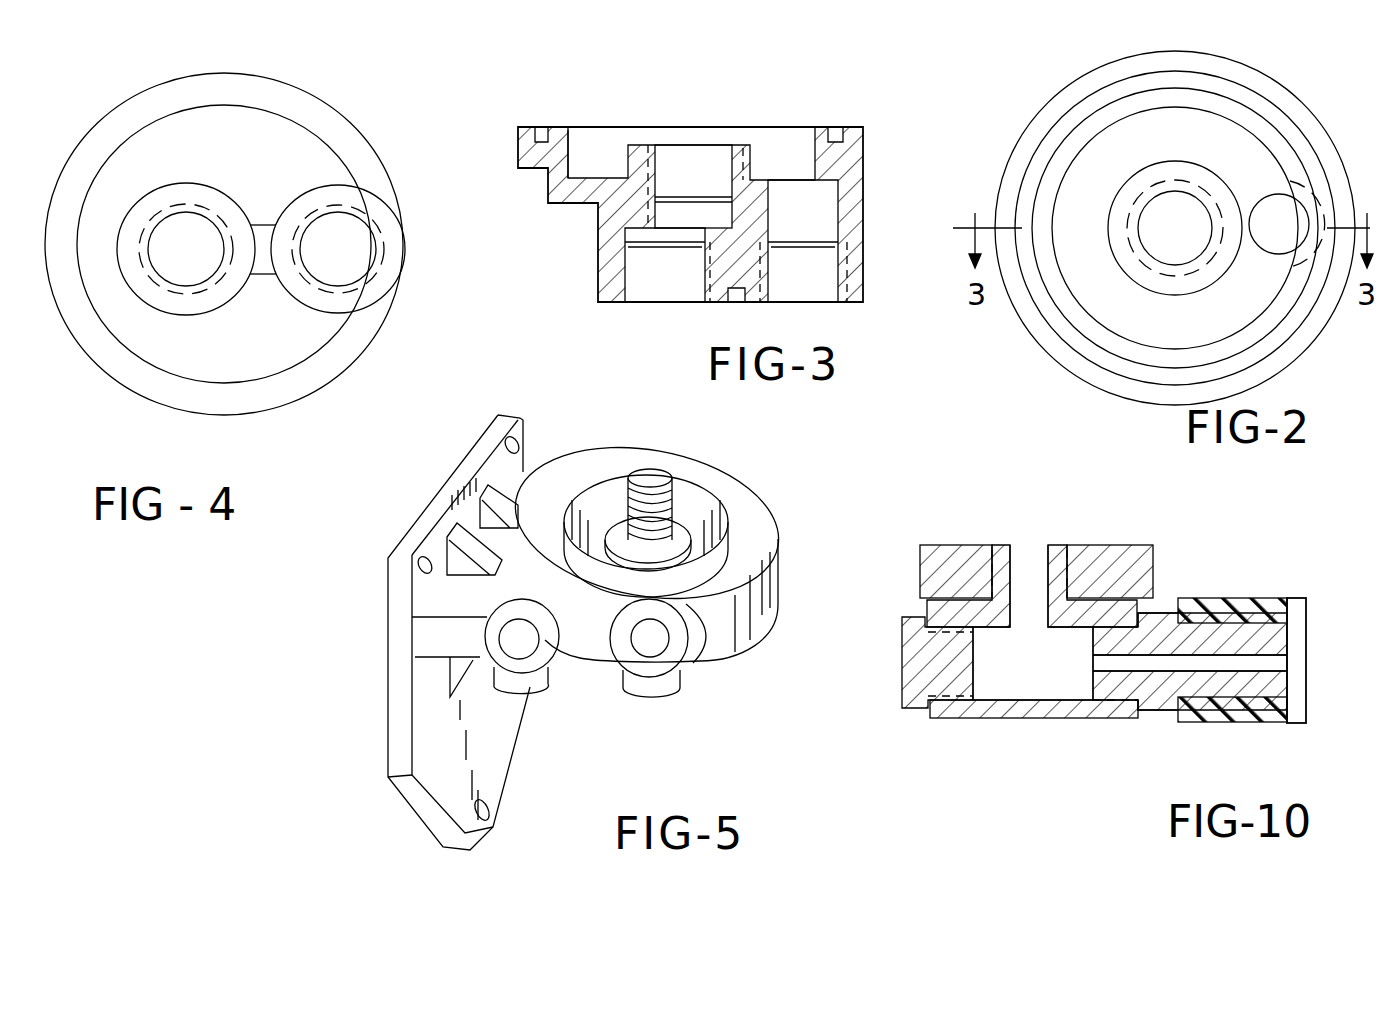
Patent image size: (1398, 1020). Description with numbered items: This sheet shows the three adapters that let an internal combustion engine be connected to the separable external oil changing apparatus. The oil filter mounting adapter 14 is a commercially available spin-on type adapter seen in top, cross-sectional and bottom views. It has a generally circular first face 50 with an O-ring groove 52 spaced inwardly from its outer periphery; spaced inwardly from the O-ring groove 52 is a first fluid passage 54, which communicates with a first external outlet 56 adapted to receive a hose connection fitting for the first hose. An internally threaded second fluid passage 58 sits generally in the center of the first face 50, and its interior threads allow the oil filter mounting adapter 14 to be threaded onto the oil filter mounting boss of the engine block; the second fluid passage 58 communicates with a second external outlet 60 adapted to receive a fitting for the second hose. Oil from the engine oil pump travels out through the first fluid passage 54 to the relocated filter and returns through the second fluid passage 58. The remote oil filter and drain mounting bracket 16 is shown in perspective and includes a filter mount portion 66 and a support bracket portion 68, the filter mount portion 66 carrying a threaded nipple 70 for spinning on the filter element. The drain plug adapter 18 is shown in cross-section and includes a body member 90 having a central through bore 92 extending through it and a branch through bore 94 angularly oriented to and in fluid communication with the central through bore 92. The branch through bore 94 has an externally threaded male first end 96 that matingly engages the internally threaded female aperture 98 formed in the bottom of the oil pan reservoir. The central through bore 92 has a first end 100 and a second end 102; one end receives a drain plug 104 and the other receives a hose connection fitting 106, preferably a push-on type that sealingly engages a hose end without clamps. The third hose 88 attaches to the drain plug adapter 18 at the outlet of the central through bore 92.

In FIG. 4, the oil filter mounting adapter 14 is at (338, 62).
In FIG. 3, the oil filter mounting adapter 14 is at (589, 258).
In FIG. 5, the remote oil filter and drain mounting bracket 16 is at (604, 628).
In FIG. 10, the drain plug adapter 18 is at (1066, 647).
In FIG. 3, the first face 50 is at (842, 130).
In FIG. 2, the first face 50 is at (1032, 135).
In FIG. 3, the O-ring groove 52 is at (542, 130).
In FIG. 2, the O-ring groove 52 is at (1097, 95).
In FIG. 3, the first fluid passage 54 is at (568, 157).
In FIG. 2, the first fluid passage 54 is at (1250, 137).
In FIG. 4, the first external outlet 56 is at (323, 258).
In FIG. 3, the first external outlet 56 is at (790, 292).
In FIG. 3, the second fluid passage 58 is at (682, 177).
In FIG. 2, the second fluid passage 58 is at (1142, 247).
In FIG. 4, the second external outlet 60 is at (168, 270).
In FIG. 3, the second external outlet 60 is at (672, 283).
In FIG. 5, the filter mount portion 66 is at (676, 432).
In FIG. 5, the support bracket portion 68 is at (590, 422).
In FIG. 5, the threaded nipple 70 is at (660, 481).
In FIG. 10, the third hose 88 is at (1300, 566).
In FIG. 10, the body member 90 is at (1010, 720).
In FIG. 10, the central through bore 92 is at (1054, 684).
In FIG. 10, the branch through bore 94 is at (1097, 545).
In FIG. 10, the externally threaded male first end 96 is at (1005, 548).
In FIG. 10, the internally threaded female aperture 98 is at (1045, 578).
In FIG. 10, the first end 100 is at (923, 713).
In FIG. 10, the second end 102 is at (1138, 715).
In FIG. 10, the drain plug 104 is at (902, 687).
In FIG. 10, the hose connection fitting 106 is at (1163, 615).